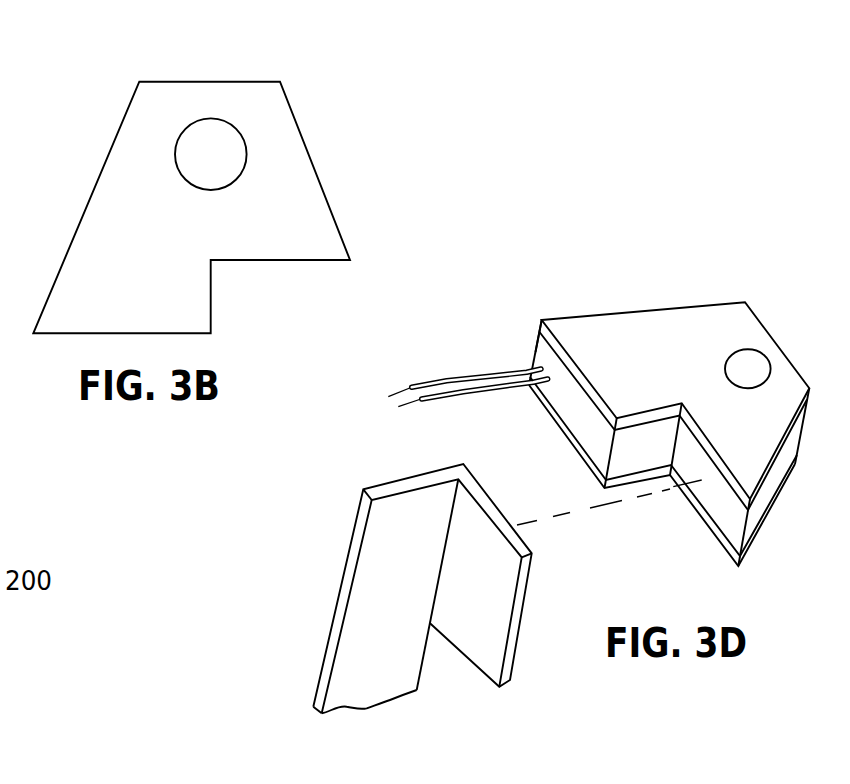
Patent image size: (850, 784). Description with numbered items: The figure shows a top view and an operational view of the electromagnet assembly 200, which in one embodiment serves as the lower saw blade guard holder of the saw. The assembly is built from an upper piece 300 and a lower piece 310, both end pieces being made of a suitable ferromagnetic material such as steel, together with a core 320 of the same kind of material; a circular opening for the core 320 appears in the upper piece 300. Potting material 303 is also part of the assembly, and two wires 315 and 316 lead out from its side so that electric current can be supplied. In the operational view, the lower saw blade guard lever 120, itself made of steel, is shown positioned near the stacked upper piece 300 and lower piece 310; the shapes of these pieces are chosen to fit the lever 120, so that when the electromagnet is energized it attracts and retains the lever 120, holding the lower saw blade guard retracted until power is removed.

In FIG. 3B, the electromagnet assembly 200 is at (215, 179).
In FIG. 3D, the electromagnet assembly 200 is at (654, 382).
In FIG. 3B, the upper piece 300 is at (138, 108).
In FIG. 3D, the upper piece 300 is at (635, 320).
In FIG. 3D, the potting material 303 is at (537, 352).
In FIG. 3D, the lower piece 310 is at (567, 438).
In FIG. 3D, the wire 315 is at (467, 370).
In FIG. 3D, the wire 316 is at (448, 402).
In FIG. 3B, the core 320 is at (175, 152).
In FIG. 3D, the core 320 is at (757, 360).
In FIG. 3D, the lower saw blade guard lever 120 is at (350, 548).